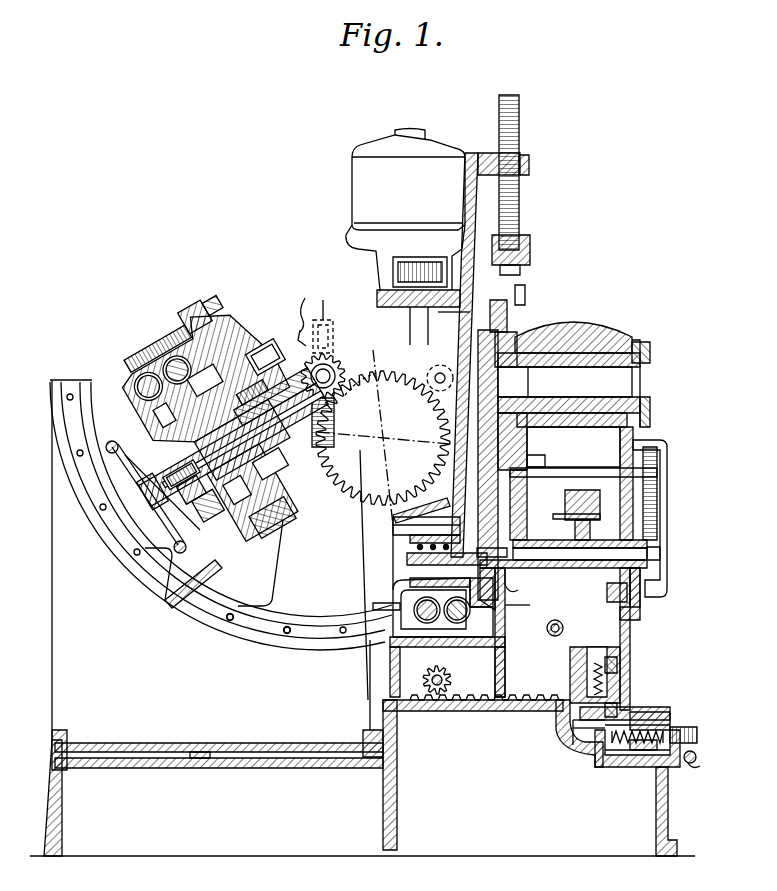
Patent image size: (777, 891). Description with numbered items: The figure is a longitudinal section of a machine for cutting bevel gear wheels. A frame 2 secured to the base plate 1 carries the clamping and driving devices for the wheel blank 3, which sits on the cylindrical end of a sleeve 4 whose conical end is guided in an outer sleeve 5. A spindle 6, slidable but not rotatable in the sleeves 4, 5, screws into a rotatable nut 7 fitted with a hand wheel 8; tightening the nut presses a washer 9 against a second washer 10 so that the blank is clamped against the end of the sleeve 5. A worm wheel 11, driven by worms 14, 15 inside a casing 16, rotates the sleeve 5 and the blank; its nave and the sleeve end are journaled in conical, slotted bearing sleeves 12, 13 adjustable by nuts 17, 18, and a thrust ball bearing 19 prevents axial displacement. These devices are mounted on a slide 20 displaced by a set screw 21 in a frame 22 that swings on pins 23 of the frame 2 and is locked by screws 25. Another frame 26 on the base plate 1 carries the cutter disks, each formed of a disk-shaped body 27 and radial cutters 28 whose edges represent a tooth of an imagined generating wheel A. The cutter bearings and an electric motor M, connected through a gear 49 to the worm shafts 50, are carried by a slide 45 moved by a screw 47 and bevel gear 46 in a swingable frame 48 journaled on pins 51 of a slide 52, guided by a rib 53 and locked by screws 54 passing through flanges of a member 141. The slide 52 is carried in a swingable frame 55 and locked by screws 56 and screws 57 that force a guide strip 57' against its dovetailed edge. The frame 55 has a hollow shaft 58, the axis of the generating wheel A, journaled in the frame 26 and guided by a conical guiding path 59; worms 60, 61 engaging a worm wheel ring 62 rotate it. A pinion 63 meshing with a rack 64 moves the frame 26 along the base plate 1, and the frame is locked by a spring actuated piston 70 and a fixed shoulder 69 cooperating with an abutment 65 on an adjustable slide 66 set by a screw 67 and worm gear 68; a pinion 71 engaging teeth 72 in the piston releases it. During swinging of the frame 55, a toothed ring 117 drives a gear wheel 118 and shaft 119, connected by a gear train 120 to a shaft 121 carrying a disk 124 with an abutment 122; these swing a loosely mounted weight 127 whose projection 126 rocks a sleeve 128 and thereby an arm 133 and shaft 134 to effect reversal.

The base plate 1 is at (362, 778).
The frame 2 is at (200, 760).
The wheel blank 3 is at (276, 342).
The sleeve 4 is at (255, 362).
The outer sleeve 5 is at (248, 374).
The spindle 6 is at (300, 345).
The nut 7 is at (182, 499).
The hand wheel 8 is at (178, 553).
The washer 9 is at (340, 366).
The second washer 10 is at (255, 560).
The worm wheel 11 is at (252, 479).
The bearing sleeve 12 is at (201, 515).
The bearing sleeve 13 is at (247, 468).
The worm 14 is at (149, 337).
The worm 15 is at (182, 323).
The casing 16 is at (276, 525).
The nut 17 is at (160, 455).
The nut 18 is at (314, 440).
The thrust ball bearing 19 is at (222, 580).
The slide 20 is at (157, 518).
The set screw 21 is at (130, 335).
The frame 22 is at (200, 375).
The pins 23 is at (292, 303).
The screws 25 is at (285, 633).
The frame 26 is at (572, 330).
The disk-shaped bodies 27 is at (385, 372).
The cutters or teeth 28 is at (395, 372).
The slide 45 is at (470, 152).
The bevel gear 46 is at (514, 273).
The screw 47 is at (520, 140).
The swingable frame 48 is at (522, 246).
The gear 49 is at (380, 268).
The shafts 50 is at (410, 318).
The pins 51 is at (442, 364).
The slide 52 is at (520, 307).
The projection or rib 53 is at (407, 555).
The screws 54 is at (440, 540).
The swingable frame 55 is at (505, 340).
The screws 56 is at (512, 580).
The screws 57 is at (510, 292).
The guide strip 57' is at (450, 322).
The hollow pin or shaft 58 is at (618, 345).
The conical guiding path 59 is at (530, 605).
The driving worm 60 is at (458, 624).
The driving worm 61 is at (425, 625).
The worm wheel ring 62 is at (400, 588).
The pinion 63 is at (452, 680).
The rack 64 is at (525, 696).
The abutment 65 is at (600, 745).
The adjustable slide 66 is at (650, 712).
The screw 67 is at (610, 757).
The worm gear 68 is at (691, 763).
The fixed shoulder 69 is at (617, 710).
The spring actuated locking pin or piston 70 is at (573, 724).
The pinion 71 is at (617, 668).
The teeth 72 is at (620, 658).
The toothed ring 117 is at (530, 445).
The gear wheel 118 is at (530, 460).
The shaft 119 is at (570, 470).
The gear train 120 is at (657, 489).
The shaft 121 is at (660, 545).
The abutment 122 is at (608, 594).
The disk 124 is at (630, 578).
The projection 126 is at (558, 510).
The weight 127 is at (566, 494).
The sleeve 128 is at (575, 532).
The arm 133 is at (548, 630).
The shaft 134 is at (562, 627).
The member 141 is at (393, 527).
The imagined generating wheel A is at (316, 318).
The electric motor M is at (375, 148).